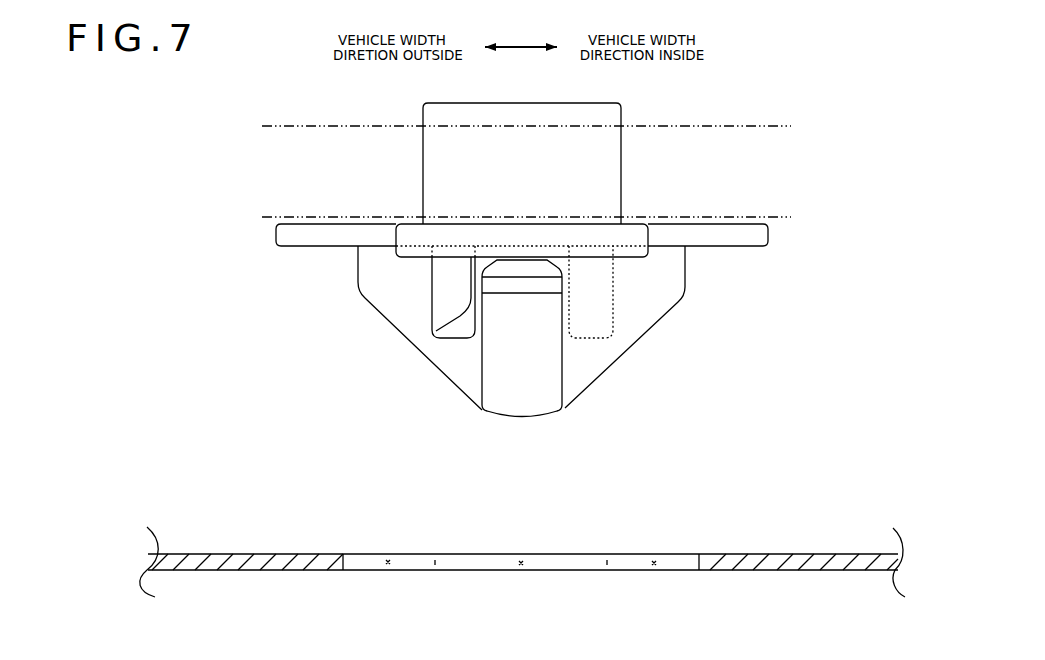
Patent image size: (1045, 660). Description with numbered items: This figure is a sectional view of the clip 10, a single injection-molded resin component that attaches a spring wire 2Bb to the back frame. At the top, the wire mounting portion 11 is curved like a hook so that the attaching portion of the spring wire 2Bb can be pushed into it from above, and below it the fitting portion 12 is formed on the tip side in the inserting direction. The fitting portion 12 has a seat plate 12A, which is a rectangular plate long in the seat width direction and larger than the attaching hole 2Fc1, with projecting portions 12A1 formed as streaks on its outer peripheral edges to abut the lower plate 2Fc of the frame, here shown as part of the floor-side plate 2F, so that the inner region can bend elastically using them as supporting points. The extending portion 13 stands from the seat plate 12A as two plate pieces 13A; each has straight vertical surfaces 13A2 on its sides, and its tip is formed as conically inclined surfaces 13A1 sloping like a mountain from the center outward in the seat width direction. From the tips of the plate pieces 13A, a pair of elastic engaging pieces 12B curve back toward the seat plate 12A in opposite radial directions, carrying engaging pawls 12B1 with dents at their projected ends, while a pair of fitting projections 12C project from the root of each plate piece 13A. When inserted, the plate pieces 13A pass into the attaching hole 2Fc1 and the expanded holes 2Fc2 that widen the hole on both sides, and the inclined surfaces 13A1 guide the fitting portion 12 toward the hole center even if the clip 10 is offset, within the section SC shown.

The clip 10 is at (627, 117).
The wire mounting portion 11 is at (562, 118).
The fitting portion 12 is at (532, 334).
The seat plate 12A is at (573, 277).
The projecting portions 12A1 is at (593, 251).
The elastic engaging pieces 12B is at (485, 352).
The engaging pawls 12B1 is at (517, 267).
The fitting projections 12C is at (450, 287).
The extending portion 13 is at (522, 324).
The plate pieces 13A is at (520, 353).
The inclined surfaces 13A1 is at (447, 378).
The vertical surfaces 13A2 is at (358, 263).
The spring wire 2Bb is at (704, 143).
The section SC is at (795, 152).
The floor panel 2F is at (522, 573).
The lower plate 2Fc is at (522, 573).
The attaching hole 2Fc1 is at (521, 567).
The expanded hole 2Fc2 is at (388, 566).